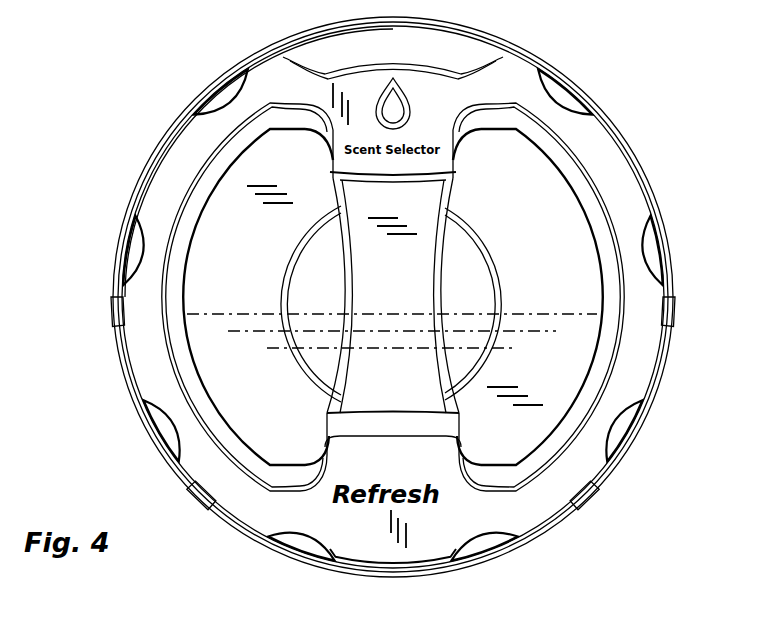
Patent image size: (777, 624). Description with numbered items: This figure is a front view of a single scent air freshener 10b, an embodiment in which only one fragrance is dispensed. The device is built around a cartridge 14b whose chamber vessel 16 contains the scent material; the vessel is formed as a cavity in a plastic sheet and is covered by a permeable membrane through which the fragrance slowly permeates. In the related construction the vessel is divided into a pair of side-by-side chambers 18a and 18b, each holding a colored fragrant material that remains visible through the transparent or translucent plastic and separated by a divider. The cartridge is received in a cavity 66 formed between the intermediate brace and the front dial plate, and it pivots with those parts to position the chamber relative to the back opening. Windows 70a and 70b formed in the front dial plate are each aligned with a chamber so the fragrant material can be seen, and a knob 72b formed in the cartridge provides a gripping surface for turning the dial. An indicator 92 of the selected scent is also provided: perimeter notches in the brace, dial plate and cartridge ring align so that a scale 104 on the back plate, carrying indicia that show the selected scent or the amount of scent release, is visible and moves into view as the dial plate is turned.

The air freshener 10b is at (120, 447).
The second reservoir portion 14b is at (513, 170).
The chamber vessel 16 is at (547, 190).
The first chamber 18a is at (233, 217).
The second chamber 18b is at (568, 217).
The cavity 66 is at (253, 417).
The first window 70a is at (210, 291).
The second window 70b is at (573, 337).
The knob 72b is at (408, 257).
The indicator 92 is at (488, 28).
The scale 104 is at (333, 62).